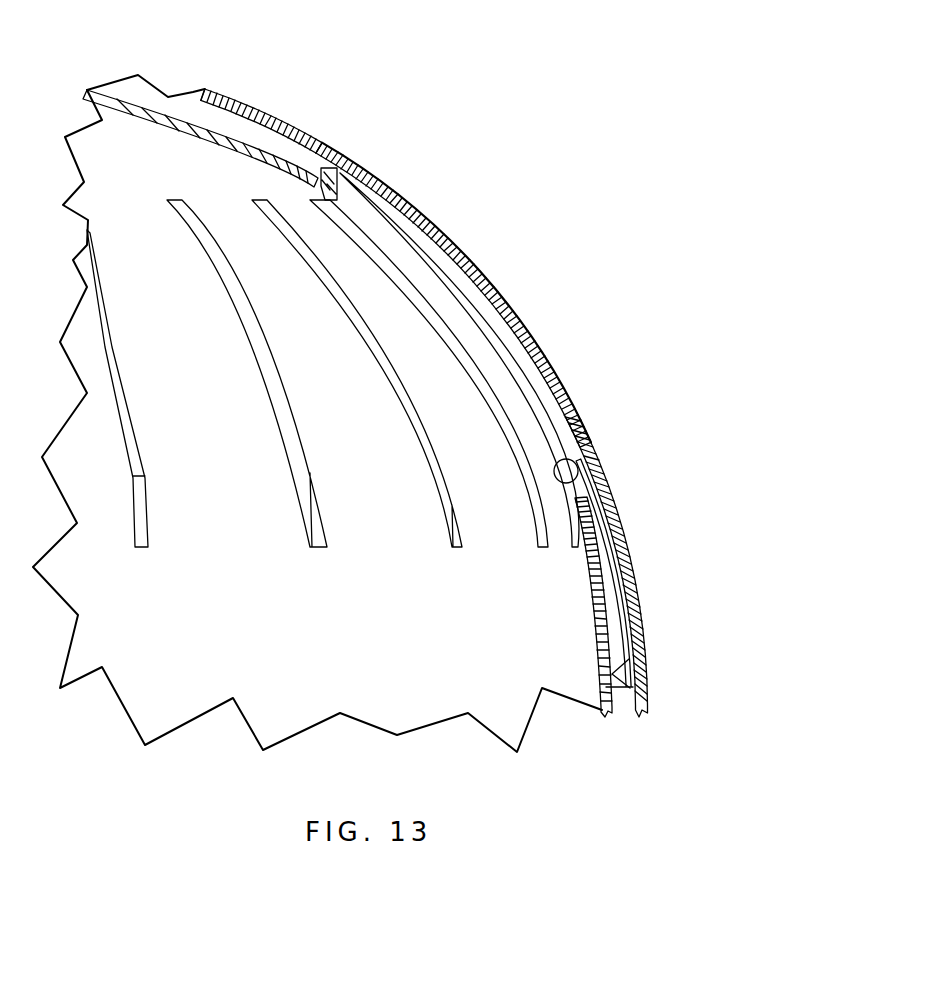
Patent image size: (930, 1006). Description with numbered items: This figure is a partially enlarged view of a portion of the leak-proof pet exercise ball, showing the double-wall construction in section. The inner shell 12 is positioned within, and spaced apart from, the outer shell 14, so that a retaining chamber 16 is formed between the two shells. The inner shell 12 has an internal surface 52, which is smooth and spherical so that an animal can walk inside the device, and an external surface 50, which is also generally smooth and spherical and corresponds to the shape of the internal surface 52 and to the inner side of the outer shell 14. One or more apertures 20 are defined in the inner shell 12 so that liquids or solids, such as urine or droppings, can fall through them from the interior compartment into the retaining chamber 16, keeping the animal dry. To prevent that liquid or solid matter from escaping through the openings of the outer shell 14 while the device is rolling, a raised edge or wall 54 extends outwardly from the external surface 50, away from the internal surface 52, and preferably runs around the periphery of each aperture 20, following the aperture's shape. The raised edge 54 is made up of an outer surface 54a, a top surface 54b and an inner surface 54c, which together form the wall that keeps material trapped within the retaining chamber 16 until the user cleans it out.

The inner shell 12 is at (612, 674).
The outer shell 14 is at (661, 621).
The retaining chamber 16 is at (263, 137).
The apertures 20 is at (293, 427).
The external surface 50 is at (237, 136).
The internal surface 52 is at (150, 112).
The raised edge 54 is at (540, 386).
The outer surface 54a is at (322, 172).
The top surface 54b is at (318, 168).
The inner surface 54c is at (340, 192).